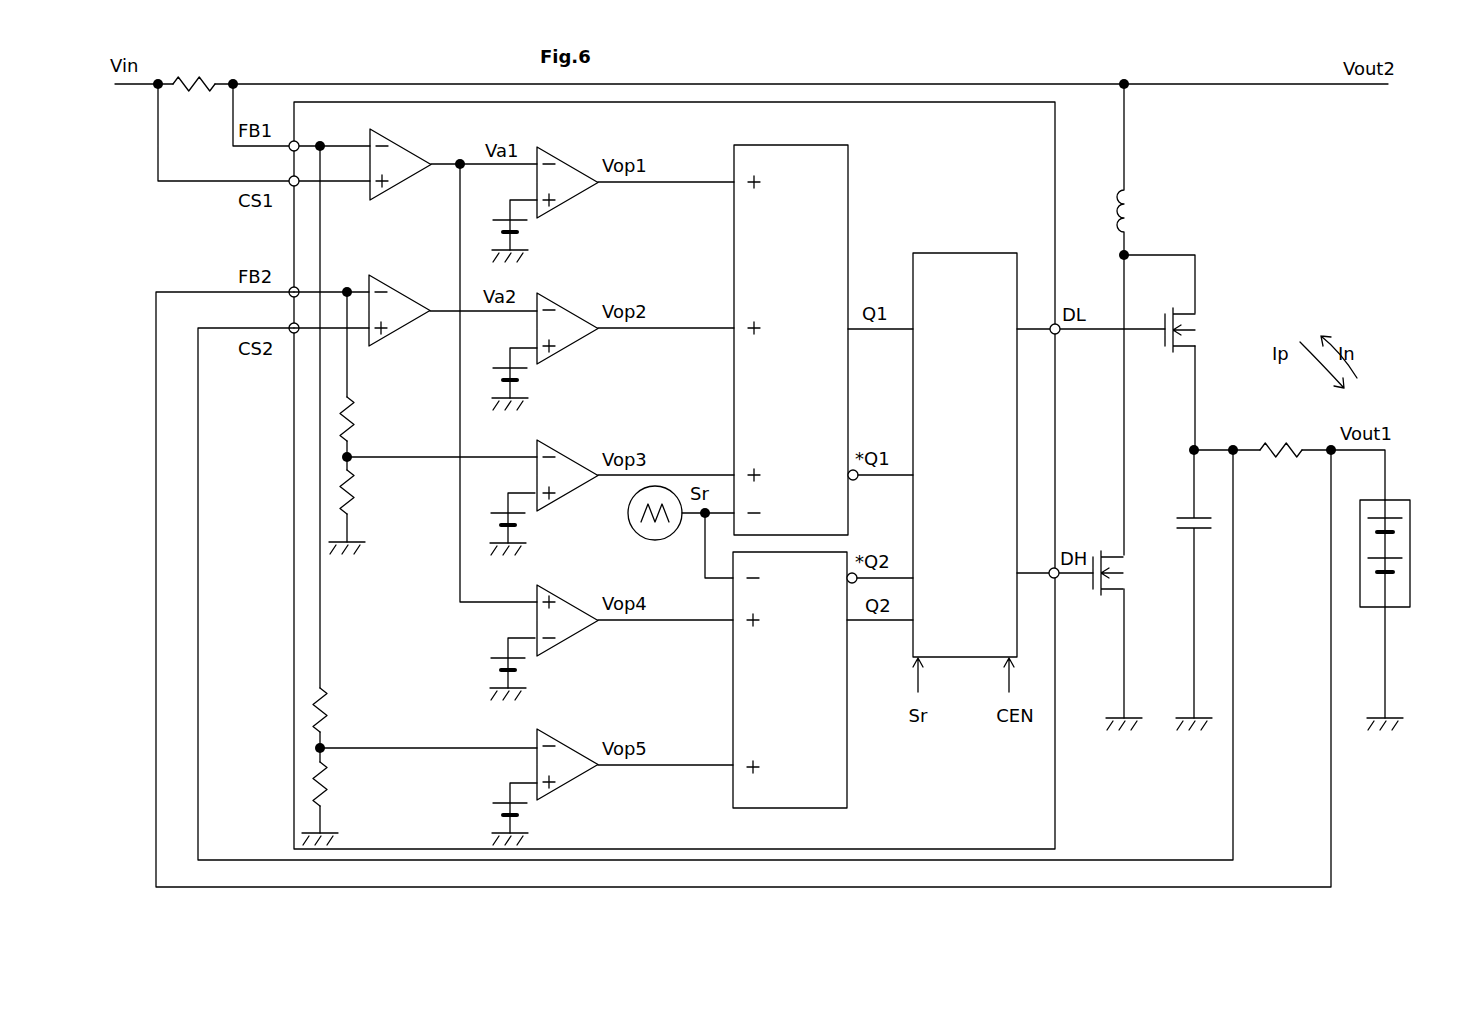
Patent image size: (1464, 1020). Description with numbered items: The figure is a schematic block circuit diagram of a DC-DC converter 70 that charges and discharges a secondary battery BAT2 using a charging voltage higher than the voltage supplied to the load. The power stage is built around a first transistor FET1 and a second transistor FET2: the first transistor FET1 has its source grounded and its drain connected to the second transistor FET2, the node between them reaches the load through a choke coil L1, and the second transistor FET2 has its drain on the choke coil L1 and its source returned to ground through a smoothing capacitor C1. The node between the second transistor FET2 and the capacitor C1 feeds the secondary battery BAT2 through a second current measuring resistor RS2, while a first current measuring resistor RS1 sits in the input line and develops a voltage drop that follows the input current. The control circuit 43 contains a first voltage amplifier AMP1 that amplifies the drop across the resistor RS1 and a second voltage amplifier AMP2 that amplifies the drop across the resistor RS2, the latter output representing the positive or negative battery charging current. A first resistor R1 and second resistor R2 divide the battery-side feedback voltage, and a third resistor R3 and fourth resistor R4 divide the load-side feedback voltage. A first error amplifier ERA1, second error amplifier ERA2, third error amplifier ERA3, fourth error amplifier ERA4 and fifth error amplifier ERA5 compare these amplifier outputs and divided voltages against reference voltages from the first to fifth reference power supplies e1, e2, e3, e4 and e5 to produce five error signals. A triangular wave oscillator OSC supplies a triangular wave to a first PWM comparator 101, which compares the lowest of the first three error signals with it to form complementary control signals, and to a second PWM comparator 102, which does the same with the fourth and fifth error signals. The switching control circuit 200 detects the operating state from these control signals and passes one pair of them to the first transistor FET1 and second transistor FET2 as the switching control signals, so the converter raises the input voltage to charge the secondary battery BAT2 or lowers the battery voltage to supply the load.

The DC-DC converter 70 is at (1351, 173).
The control circuit 43 is at (1056, 146).
The first current measuring resistor RS1 is at (192, 70).
The second current measuring resistor RS2 is at (1280, 440).
The first voltage amplifier AMP1 is at (395, 134).
The second voltage amplifier AMP2 is at (410, 277).
The first error amplifier ERA1 is at (584, 144).
The second error amplifier ERA2 is at (584, 289).
The third error amplifier ERA3 is at (584, 436).
The fourth error amplifier ERA4 is at (584, 582).
The fifth error amplifier ERA5 is at (584, 726).
The first reference power supply e1 is at (494, 214).
The second reference power supply e2 is at (494, 361).
The third reference power supply e3 is at (494, 510).
The fourth reference power supply e4 is at (494, 655).
The fifth reference power supply e5 is at (494, 800).
The first resistor R1 is at (356, 416).
The second resistor R2 is at (356, 489).
The third resistor R3 is at (329, 708).
The fourth resistor R4 is at (329, 783).
The triangular wave oscillator OSC is at (628, 509).
The first PWM comparator 101 is at (850, 163).
The second PWM comparator 102 is at (849, 786).
The switching control circuit 200 is at (993, 235).
The choke coil L1 is at (1138, 211).
The first transistor FET1 is at (1118, 582).
The second transistor FET2 is at (1190, 322).
The smoothing capacitor C1 is at (1182, 518).
The secondary battery BAT2 is at (1385, 500).